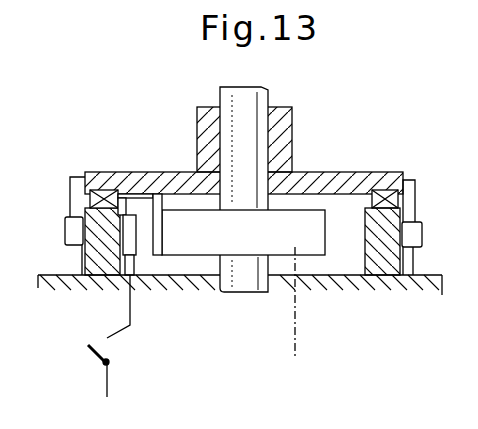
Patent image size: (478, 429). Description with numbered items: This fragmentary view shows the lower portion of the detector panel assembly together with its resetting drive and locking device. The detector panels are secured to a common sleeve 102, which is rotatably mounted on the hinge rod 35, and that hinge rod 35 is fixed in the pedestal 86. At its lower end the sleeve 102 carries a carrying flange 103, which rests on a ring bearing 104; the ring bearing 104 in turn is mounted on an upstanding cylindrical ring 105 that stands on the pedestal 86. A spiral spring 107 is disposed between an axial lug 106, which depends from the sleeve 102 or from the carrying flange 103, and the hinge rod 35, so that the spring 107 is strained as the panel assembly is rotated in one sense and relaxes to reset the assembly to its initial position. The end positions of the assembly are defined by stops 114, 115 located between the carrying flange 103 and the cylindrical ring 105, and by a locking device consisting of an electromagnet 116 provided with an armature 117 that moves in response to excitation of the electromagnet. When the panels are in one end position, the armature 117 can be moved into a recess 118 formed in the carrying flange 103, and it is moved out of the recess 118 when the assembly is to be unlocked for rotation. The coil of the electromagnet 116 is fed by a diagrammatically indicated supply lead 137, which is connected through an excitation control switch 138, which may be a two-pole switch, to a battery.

The hinge rod 35 is at (238, 278).
The pedestal 86 is at (435, 280).
The common sleeve 102 is at (208, 125).
The carrying flange 103 is at (322, 180).
The ring bearing 104 is at (403, 173).
The upstanding cylindrical ring 105 is at (382, 252).
The axial lug 106 is at (157, 207).
The spiral spring 107 is at (299, 317).
The stop 114 is at (75, 237).
The stop 115 is at (410, 247).
The electromagnet 116 is at (132, 247).
The armature 117 is at (132, 203).
The recess 118 is at (125, 193).
The supply lead 137 is at (118, 333).
The excitation control switch 138 is at (97, 358).